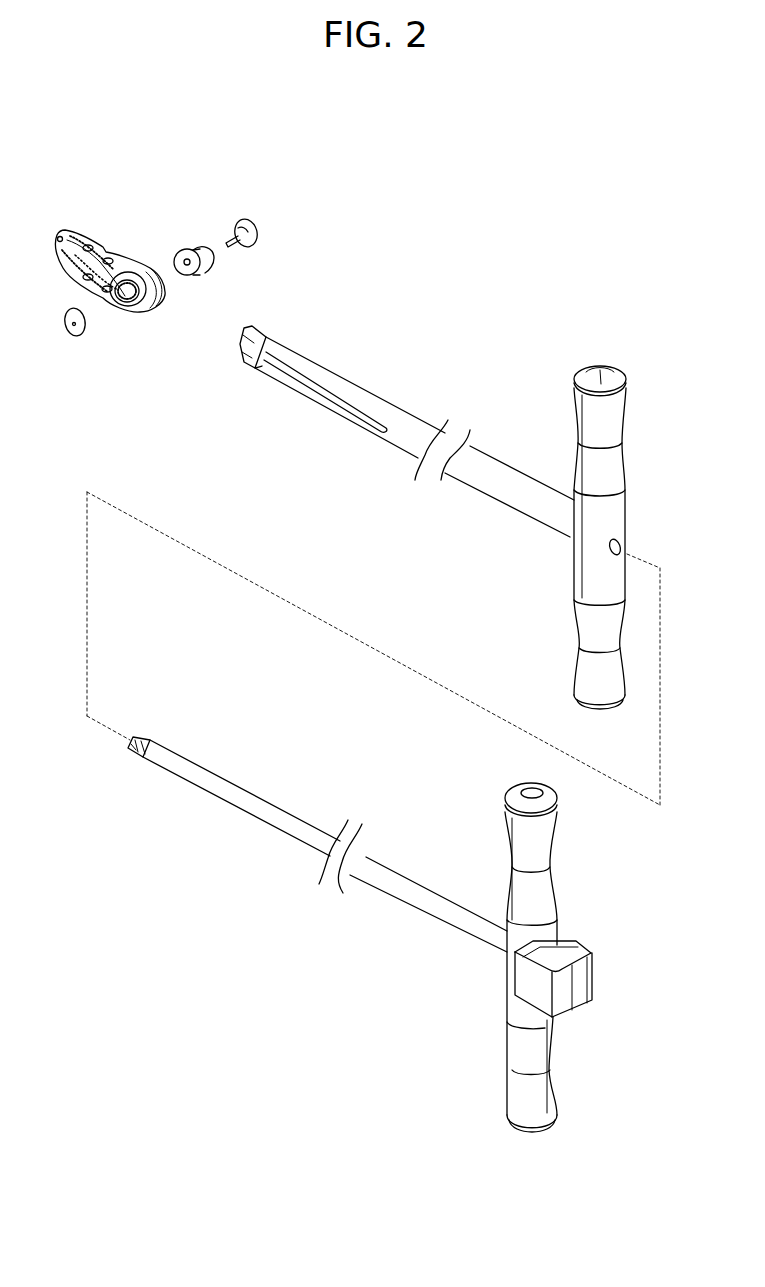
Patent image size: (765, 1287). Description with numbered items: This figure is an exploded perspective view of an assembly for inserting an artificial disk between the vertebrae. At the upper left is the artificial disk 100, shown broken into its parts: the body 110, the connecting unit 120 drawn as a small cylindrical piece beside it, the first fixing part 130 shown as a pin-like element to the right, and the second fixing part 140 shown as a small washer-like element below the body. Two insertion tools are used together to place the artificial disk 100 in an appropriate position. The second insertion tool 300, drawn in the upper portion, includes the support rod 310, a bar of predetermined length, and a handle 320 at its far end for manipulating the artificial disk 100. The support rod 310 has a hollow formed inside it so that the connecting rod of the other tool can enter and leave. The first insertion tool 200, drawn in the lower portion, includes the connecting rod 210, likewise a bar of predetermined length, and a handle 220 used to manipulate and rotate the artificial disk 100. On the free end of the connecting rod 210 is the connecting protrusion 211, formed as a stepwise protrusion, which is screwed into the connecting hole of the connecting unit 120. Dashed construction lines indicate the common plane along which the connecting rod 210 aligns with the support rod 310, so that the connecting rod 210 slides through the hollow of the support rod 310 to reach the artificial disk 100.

The artificial disk 100 is at (195, 308).
The body 110 is at (103, 244).
The connecting unit 120 is at (195, 244).
The first fixing part 130 is at (258, 224).
The second fixing part 140 is at (75, 337).
The first insertion tool 200 is at (333, 934).
The connecting rod 210 is at (291, 844).
The connecting protrusion 211 is at (134, 752).
The handle 220 is at (516, 1047).
The second insertion tool 300 is at (433, 508).
The support rod 310 is at (398, 415).
The handle 320 is at (602, 370).